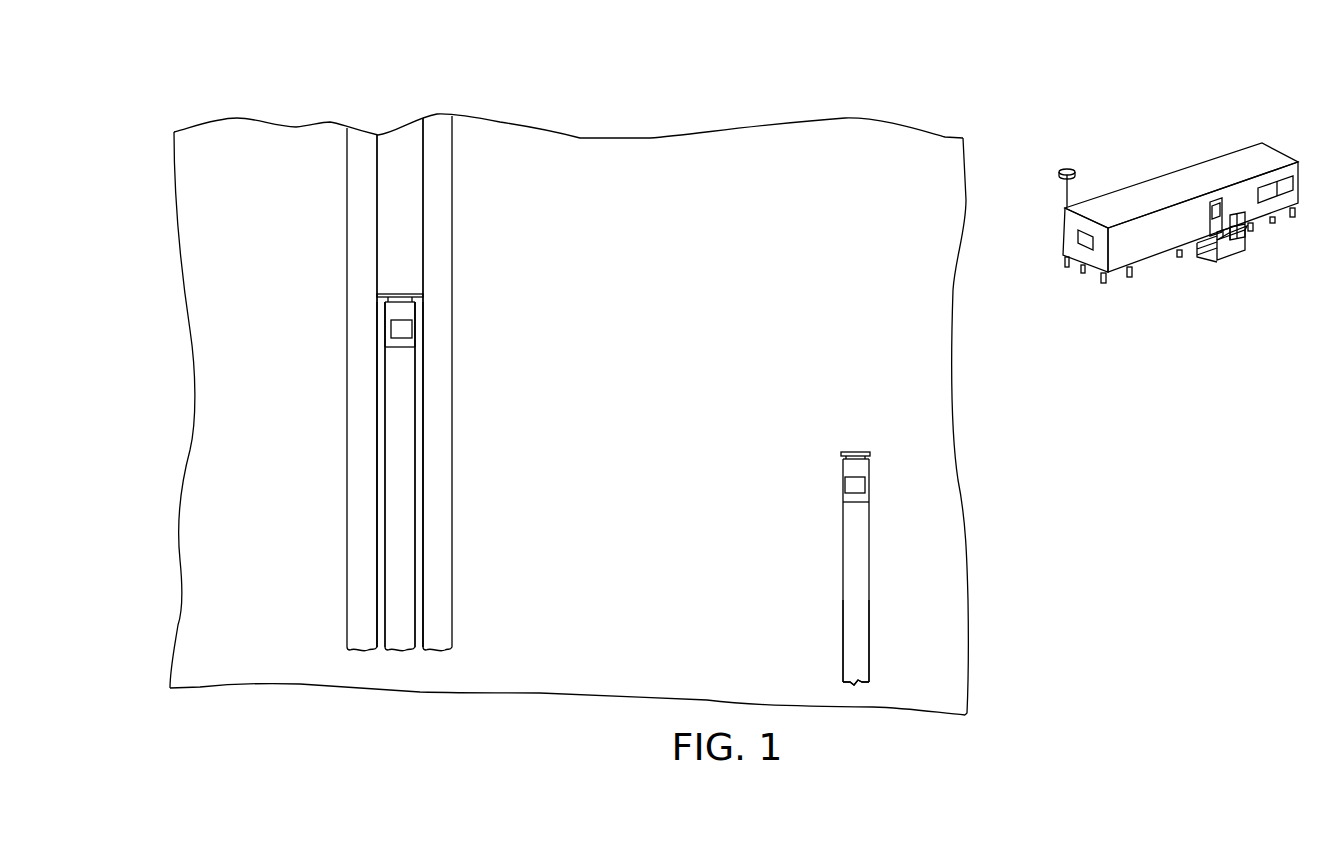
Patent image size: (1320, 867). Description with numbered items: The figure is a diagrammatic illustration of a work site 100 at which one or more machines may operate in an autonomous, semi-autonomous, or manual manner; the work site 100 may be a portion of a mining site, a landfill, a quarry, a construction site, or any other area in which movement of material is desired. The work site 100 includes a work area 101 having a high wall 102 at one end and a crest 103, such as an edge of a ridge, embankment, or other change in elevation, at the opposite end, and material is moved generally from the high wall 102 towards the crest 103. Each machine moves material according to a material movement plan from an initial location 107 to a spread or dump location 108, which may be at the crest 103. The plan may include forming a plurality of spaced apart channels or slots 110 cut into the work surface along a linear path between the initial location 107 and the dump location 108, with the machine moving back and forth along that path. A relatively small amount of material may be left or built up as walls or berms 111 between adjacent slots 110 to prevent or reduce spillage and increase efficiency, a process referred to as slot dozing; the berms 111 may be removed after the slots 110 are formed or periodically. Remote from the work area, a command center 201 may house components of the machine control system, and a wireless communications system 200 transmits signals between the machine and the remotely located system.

The work site 100 is at (208, 93).
The work area 101 is at (228, 267).
The high wall 102 is at (892, 707).
The crest 103 is at (296, 127).
The initial location 107 is at (816, 694).
The dump location 108 is at (399, 112).
The slots 110 is at (402, 472).
The berms 111 is at (382, 412).
The wireless communications system 200 is at (1075, 172).
The command center 201 is at (1188, 190).